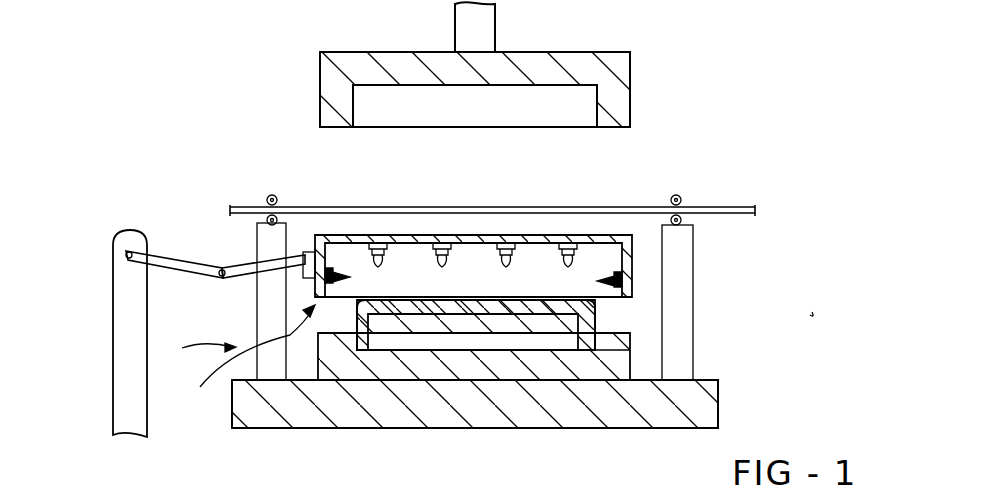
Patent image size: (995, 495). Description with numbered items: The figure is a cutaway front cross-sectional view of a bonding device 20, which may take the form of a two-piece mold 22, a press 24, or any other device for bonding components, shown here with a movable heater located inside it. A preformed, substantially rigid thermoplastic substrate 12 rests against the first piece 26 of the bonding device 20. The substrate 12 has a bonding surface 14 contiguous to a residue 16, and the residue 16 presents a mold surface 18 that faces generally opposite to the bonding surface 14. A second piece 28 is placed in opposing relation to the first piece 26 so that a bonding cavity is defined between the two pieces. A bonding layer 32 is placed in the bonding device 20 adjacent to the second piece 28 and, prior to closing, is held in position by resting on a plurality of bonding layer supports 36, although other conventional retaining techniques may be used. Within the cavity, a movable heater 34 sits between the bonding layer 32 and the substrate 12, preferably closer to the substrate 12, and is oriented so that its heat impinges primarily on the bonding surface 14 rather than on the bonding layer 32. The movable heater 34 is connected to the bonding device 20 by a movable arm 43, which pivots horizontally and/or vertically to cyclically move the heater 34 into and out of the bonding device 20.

The thermoplastic substrate 12 is at (403, 315).
The bonding surface 14 is at (577, 300).
The residue 16 is at (468, 313).
The mold surface 18 is at (530, 314).
The bonding device 20 is at (810, 315).
The two-piece mold 22 is at (320, 72).
The press 24 is at (811, 314).
The first piece 26 is at (693, 352).
The second piece 28 is at (630, 82).
The bonding layer 32 is at (440, 207).
The movable heater 34 is at (333, 235).
The bonding layer supports 36 is at (694, 258).
The movable arm 43 is at (170, 253).